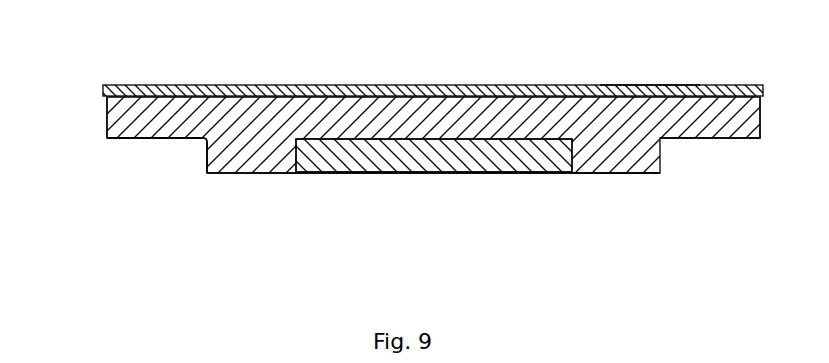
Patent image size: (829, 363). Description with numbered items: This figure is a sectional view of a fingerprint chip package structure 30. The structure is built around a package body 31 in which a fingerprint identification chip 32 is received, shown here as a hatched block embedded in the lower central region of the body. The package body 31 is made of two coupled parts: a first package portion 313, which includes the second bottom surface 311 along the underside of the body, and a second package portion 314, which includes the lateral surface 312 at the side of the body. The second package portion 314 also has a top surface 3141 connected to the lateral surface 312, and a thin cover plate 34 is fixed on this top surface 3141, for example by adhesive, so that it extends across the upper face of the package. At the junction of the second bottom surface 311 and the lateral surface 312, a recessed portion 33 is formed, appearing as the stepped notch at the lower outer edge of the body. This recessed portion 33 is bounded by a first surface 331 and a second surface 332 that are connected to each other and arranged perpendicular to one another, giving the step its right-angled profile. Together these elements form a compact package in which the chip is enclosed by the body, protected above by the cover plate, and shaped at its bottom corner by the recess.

The fingerprint chip package structure 30 is at (399, 162).
The package body 31 is at (397, 202).
The second bottom surface 311 is at (250, 174).
The lateral surface 312 is at (105, 118).
The first package portion 313 is at (627, 174).
The second package portion 314 is at (692, 130).
The top surface 3141 is at (627, 87).
The fingerprint identification chip 32 is at (518, 173).
The recessed portion 33 is at (140, 181).
The first surface 331 is at (167, 139).
The second surface 332 is at (207, 162).
The cover plate 34 is at (433, 59).